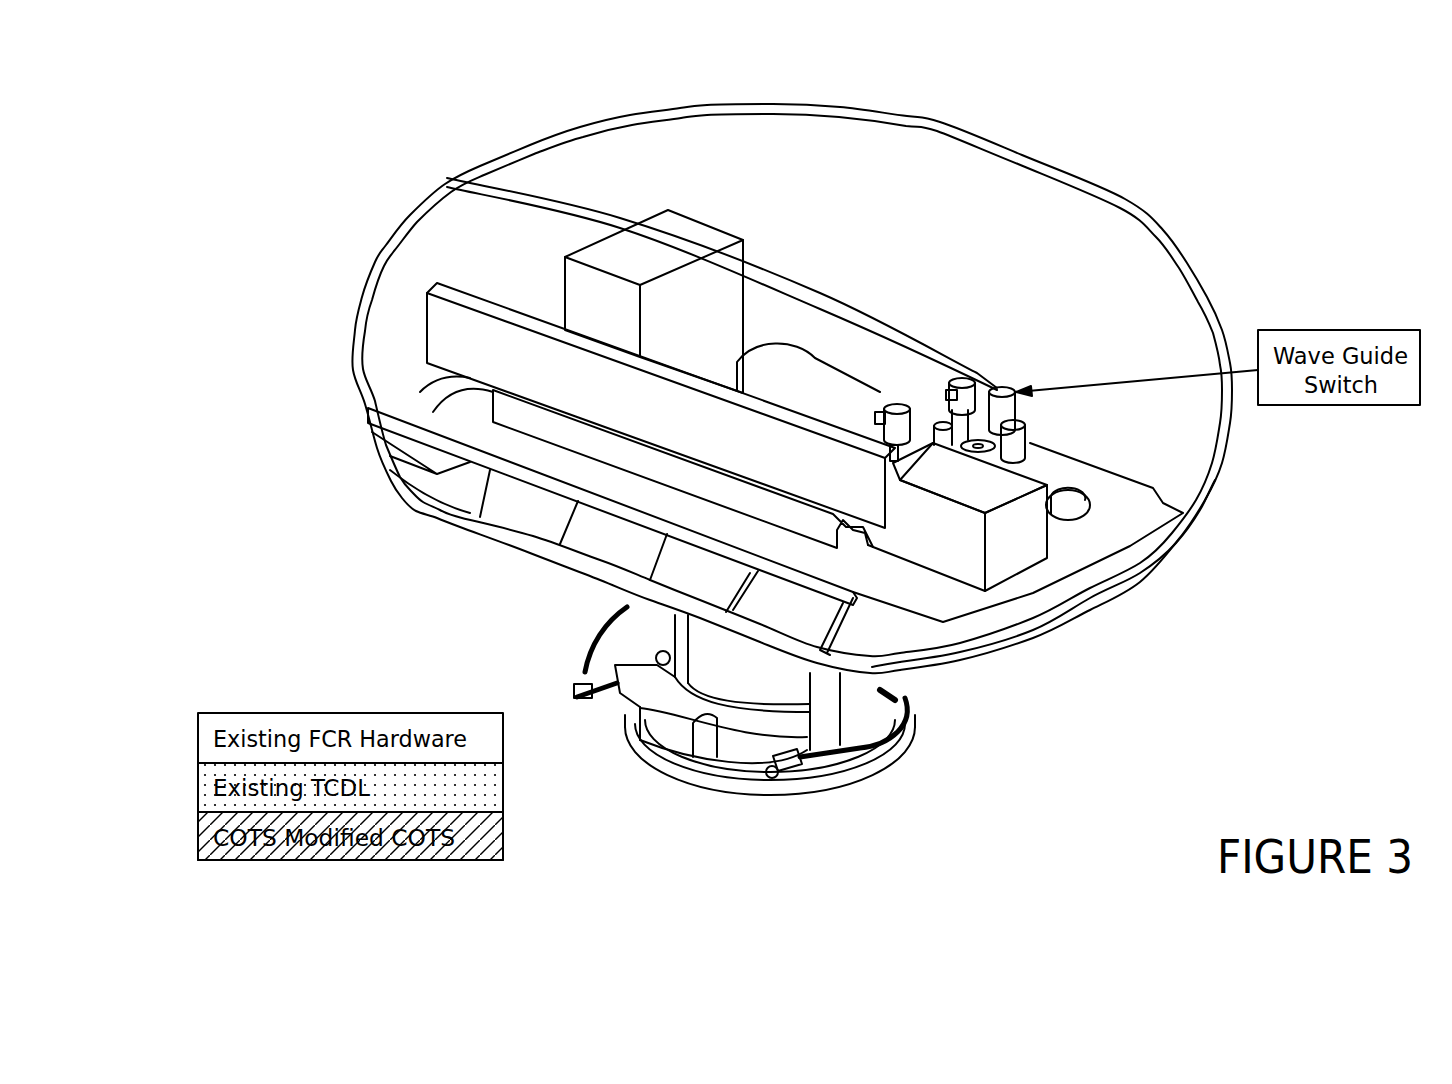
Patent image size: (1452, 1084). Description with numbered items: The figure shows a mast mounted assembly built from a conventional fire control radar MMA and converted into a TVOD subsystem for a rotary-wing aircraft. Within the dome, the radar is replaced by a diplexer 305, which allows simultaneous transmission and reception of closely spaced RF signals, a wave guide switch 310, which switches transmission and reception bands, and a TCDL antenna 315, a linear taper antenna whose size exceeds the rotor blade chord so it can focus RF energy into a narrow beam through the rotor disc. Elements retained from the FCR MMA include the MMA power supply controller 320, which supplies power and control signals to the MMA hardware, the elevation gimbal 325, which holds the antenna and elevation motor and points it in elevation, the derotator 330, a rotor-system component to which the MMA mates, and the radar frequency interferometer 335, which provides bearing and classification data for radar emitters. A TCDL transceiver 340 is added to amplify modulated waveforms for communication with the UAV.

The diplexer 305 is at (875, 371).
The wave guide switch 310 is at (1183, 239).
The TCDL antenna 315 is at (406, 354).
The MMA power supply controller 320 is at (553, 250).
The elevation gimbal 325 is at (512, 482).
The derotator 330 is at (937, 738).
The radar frequency interferometer 335 is at (830, 856).
The TCDL transceiver 340 is at (1035, 542).